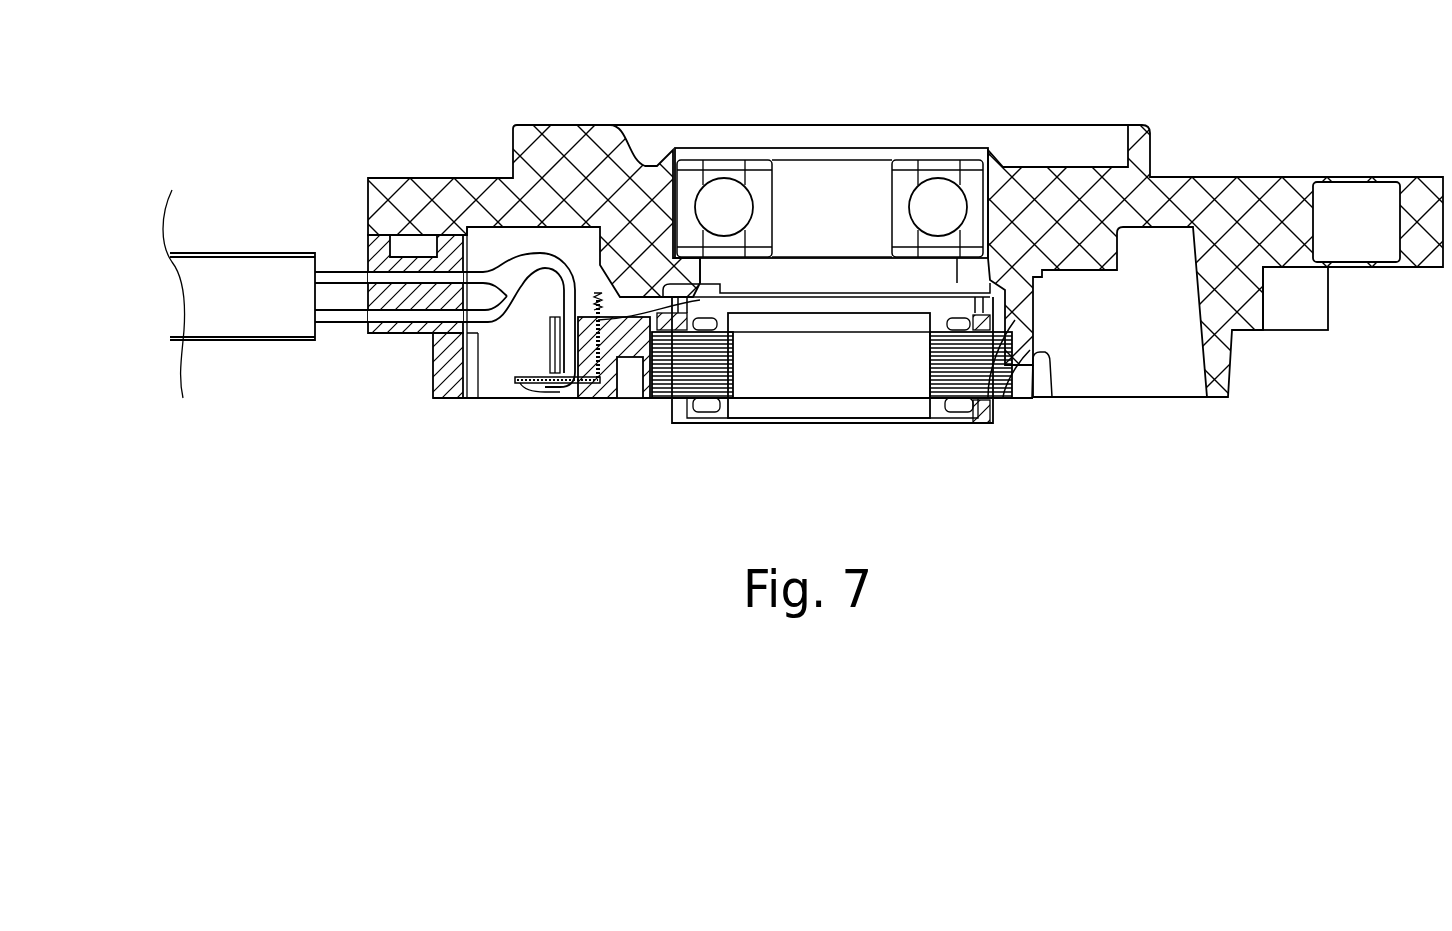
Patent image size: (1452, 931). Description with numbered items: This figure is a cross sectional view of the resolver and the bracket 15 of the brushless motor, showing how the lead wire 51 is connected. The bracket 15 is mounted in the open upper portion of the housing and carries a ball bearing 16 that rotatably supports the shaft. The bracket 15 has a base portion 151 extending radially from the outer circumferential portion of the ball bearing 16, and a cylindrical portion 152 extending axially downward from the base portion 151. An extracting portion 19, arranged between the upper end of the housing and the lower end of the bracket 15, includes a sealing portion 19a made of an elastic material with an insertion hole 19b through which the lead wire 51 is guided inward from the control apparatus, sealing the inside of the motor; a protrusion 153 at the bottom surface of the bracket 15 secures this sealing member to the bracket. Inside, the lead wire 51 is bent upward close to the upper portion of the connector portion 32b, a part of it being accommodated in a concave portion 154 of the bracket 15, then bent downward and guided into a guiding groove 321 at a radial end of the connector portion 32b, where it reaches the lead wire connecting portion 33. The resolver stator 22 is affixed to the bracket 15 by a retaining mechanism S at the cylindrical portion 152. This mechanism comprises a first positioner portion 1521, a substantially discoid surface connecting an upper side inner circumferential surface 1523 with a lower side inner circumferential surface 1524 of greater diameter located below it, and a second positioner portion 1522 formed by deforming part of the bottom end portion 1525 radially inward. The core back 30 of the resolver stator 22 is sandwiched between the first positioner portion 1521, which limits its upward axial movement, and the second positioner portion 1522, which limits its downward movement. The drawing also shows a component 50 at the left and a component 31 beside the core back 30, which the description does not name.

The bracket 15 is at (558, 125).
The base portion 151 is at (1150, 152).
The cylindrical portion 152 is at (1043, 354).
The first positioner portion 1521 is at (988, 413).
The second positioner portion 1522 is at (1010, 412).
The upper side inner circumferential surface 1523 is at (1015, 320).
The lower side inner circumferential surface 1524 is at (1030, 350).
The bottom end portion 1525 is at (997, 412).
The protrusion 153 is at (432, 215).
The concave portion 154 is at (577, 225).
The ball bearing 16 is at (970, 165).
The extracting portion 19 is at (392, 232).
The sealing portion 19a is at (433, 372).
The insertion hole 19b is at (387, 330).
The resolver stator 22 is at (931, 441).
The core back 30 is at (660, 396).
The coil 31 is at (937, 381).
The guiding groove 321 is at (555, 337).
The connector portion 32b is at (595, 399).
The lead wire connecting portion 33 is at (527, 377).
The connector 50 is at (250, 253).
The lead wire 51 is at (352, 323).
The retaining mechanism S is at (1050, 568).